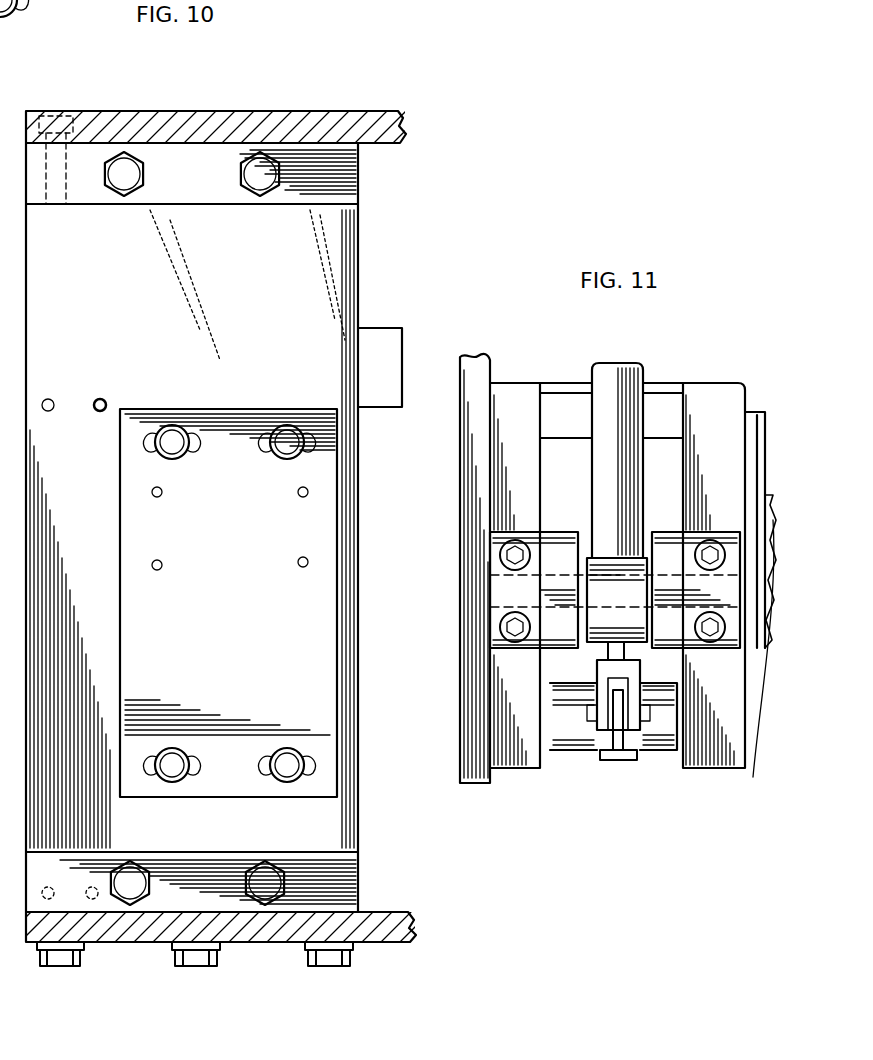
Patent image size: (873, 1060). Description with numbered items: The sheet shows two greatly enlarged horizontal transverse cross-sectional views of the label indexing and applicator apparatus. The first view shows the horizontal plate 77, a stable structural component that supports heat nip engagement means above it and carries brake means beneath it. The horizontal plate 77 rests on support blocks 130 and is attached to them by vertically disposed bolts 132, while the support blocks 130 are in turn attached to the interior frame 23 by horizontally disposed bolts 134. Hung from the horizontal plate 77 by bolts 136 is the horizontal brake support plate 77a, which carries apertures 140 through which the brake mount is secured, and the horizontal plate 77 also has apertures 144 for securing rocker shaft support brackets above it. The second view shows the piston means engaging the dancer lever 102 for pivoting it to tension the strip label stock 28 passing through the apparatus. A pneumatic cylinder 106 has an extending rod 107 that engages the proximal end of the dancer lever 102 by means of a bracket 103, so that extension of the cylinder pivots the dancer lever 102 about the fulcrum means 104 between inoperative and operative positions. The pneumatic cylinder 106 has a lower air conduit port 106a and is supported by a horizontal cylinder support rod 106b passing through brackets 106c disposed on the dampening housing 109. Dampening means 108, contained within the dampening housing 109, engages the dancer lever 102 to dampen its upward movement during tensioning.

In FIG. 10, the interior frame 23 is at (230, 113).
In FIG. 11, the cable 28 is at (760, 645).
In FIG. 10, the horizontal plate 77 is at (150, 323).
In FIG. 10, the horizontal brake support bracket 77a is at (228, 603).
In FIG. 11, the dancer lever 102 is at (616, 740).
In FIG. 11, the bracket 103 is at (603, 690).
In FIG. 11, the fulcrum means 104 is at (662, 742).
In FIG. 11, the pneumatic cylinder 106 is at (630, 378).
In FIG. 11, the lower air conduit port 106a is at (620, 609).
In FIG. 11, the horizontal cylinder support rod 106b is at (585, 583).
In FIG. 11, the brackets 106c is at (494, 538).
In FIG. 11, the extending rod 107 is at (610, 650).
In FIG. 10, the dampening means 108 is at (378, 561).
In FIG. 11, the dampening housing 109 is at (722, 400).
In FIG. 10, the support blocks 130 is at (343, 878).
In FIG. 10, the vertically disposed bolts 132 is at (272, 267).
In FIG. 10, the horizontally disposed bolts 134 is at (52, 108).
In FIG. 10, the bolts 136 is at (282, 446).
In FIG. 10, the apertures 140 is at (298, 563).
In FIG. 10, the apertures 144 is at (48, 399).